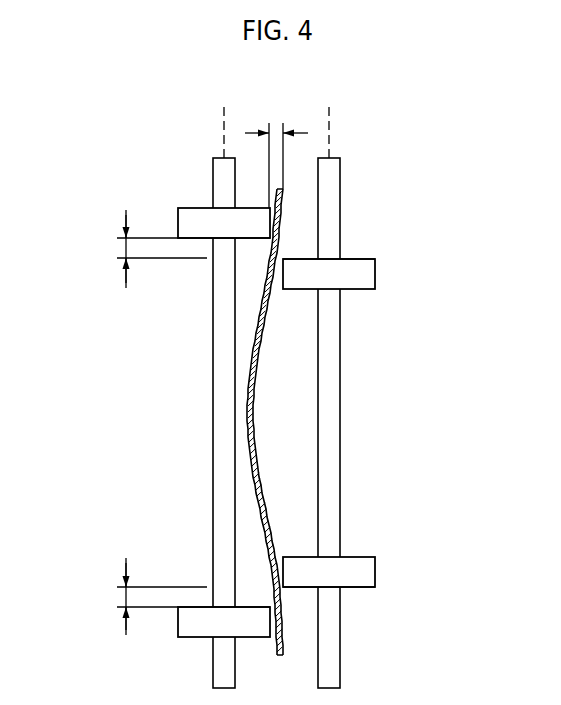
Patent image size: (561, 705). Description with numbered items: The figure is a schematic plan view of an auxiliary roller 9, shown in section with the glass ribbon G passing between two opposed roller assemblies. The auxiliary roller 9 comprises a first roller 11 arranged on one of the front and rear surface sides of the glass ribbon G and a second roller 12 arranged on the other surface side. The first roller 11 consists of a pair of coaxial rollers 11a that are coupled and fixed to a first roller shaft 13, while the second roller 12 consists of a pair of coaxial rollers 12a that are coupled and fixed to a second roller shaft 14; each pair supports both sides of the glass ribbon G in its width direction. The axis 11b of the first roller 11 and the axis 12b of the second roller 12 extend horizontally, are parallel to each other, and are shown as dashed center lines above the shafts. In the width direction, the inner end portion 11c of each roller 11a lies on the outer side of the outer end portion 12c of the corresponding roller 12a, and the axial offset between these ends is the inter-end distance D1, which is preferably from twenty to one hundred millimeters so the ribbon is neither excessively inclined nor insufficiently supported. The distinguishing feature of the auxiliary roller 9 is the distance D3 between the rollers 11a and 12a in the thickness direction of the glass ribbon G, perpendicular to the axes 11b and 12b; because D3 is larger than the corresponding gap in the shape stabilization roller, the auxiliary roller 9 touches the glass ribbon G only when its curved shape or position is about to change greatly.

The auxiliary roller 9 is at (442, 163).
The first roller 11 is at (151, 425).
The first rollers (support portions) 11a is at (178, 222).
The axis of the first roller 11b is at (222, 118).
The inner end portion 11c is at (255, 240).
The second roller 12 is at (396, 423).
The second rollers (support portions) 12a is at (375, 272).
The axis of the second roller 12b is at (330, 113).
The outer end portion 12c is at (300, 259).
The first roller shaft 13 is at (213, 438).
The second roller shaft 14 is at (340, 435).
The glass ribbon G is at (256, 347).
The inter-end distance D1 is at (126, 250).
The distance D3 is at (276, 155).